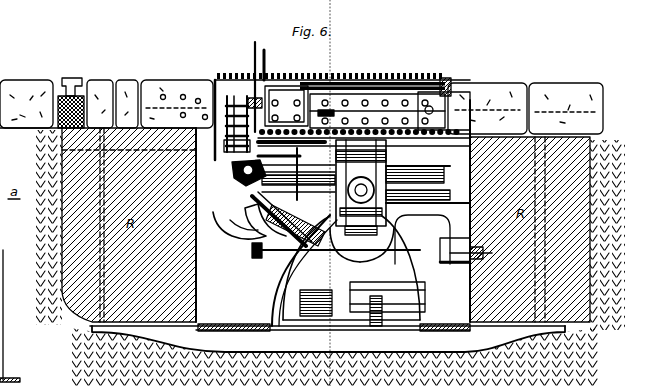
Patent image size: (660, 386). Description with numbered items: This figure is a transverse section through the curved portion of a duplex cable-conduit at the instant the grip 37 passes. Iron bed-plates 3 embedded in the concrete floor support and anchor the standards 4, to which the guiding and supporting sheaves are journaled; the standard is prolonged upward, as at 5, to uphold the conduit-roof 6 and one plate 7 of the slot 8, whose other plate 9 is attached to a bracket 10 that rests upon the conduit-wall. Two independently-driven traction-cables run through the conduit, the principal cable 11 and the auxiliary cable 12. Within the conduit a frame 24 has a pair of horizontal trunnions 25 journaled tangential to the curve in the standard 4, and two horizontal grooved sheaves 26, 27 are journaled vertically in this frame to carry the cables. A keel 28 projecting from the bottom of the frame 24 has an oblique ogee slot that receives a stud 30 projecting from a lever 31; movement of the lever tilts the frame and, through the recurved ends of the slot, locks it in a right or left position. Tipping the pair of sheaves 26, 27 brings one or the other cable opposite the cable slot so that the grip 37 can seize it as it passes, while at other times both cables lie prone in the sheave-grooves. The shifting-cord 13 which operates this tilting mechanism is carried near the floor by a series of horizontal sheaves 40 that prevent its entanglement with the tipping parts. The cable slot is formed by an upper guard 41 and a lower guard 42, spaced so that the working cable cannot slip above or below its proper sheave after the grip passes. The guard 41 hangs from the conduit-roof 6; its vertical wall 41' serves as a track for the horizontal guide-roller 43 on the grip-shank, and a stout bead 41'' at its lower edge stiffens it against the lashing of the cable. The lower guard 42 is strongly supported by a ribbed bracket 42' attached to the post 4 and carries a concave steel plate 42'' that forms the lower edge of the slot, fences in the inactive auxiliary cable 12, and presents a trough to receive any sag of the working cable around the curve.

The bed-plate 3 is at (327, 338).
The standard 4 is at (271, 297).
The upward prolongation of standard 5 is at (330, 151).
The conduit-roof 6 is at (390, 112).
The slot plate 7 is at (268, 72).
The slot 8 is at (266, 62).
The slot plate 9 is at (252, 79).
The bracket 10 is at (155, 115).
The principal cable 11 is at (232, 171).
The auxiliary cable 12 is at (252, 203).
The shifting-cord 13 is at (316, 303).
The frame 24 is at (386, 164).
The trunnion 25 is at (443, 239).
The horizontal grooved sheave 26 is at (438, 176).
The horizontal grooved sheave 27 is at (438, 197).
The keel 28 is at (345, 249).
The stud 30 is at (369, 249).
The lever 31 is at (336, 259).
The grip 37 is at (249, 100).
The horizontal sheave 40 is at (387, 304).
The upper guard 41 is at (286, 106).
The vertical wall of upper guard 41' is at (291, 152).
The bead 41'' is at (336, 113).
The lower guard 42 is at (265, 219).
The ribbed bracket 42' is at (295, 225).
The concave steel plate 42'' is at (243, 217).
The horizontal guide-roller 43 is at (225, 147).